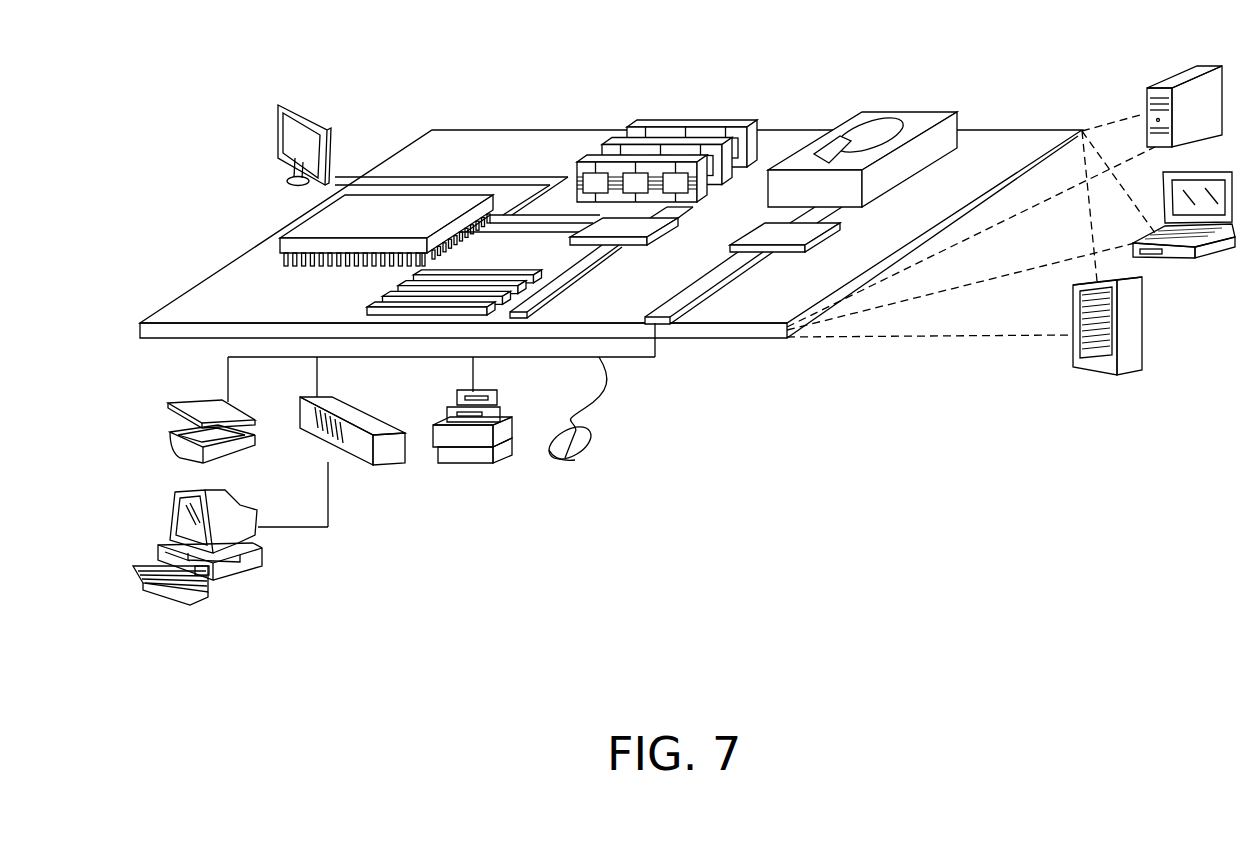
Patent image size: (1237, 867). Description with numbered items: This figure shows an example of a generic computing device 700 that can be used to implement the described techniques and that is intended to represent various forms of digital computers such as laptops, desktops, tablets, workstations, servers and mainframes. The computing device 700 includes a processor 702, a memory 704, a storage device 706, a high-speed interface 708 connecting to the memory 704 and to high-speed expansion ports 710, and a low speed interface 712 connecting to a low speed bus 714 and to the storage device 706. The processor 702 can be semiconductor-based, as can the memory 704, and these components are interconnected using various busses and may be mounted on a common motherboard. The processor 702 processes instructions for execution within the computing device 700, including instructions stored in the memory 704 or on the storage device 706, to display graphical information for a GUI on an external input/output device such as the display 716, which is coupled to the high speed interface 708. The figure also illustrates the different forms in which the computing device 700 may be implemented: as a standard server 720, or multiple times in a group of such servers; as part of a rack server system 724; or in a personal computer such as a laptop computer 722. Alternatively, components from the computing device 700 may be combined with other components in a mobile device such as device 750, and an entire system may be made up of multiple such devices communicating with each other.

The computing device 700 is at (393, 82).
The processor 702 is at (302, 221).
The memory 704 is at (695, 125).
The storage device 706 is at (900, 110).
The high-speed interface 708 is at (634, 229).
The high-speed expansion ports 710 is at (392, 291).
The low speed interface 712 is at (763, 231).
The low speed bus 714 is at (662, 311).
The display 716 is at (284, 104).
The standard server 720 is at (1165, 83).
The laptop computer 722 is at (1214, 170).
The rack server system 724 is at (1143, 327).
The mobile device 750 is at (530, 660).